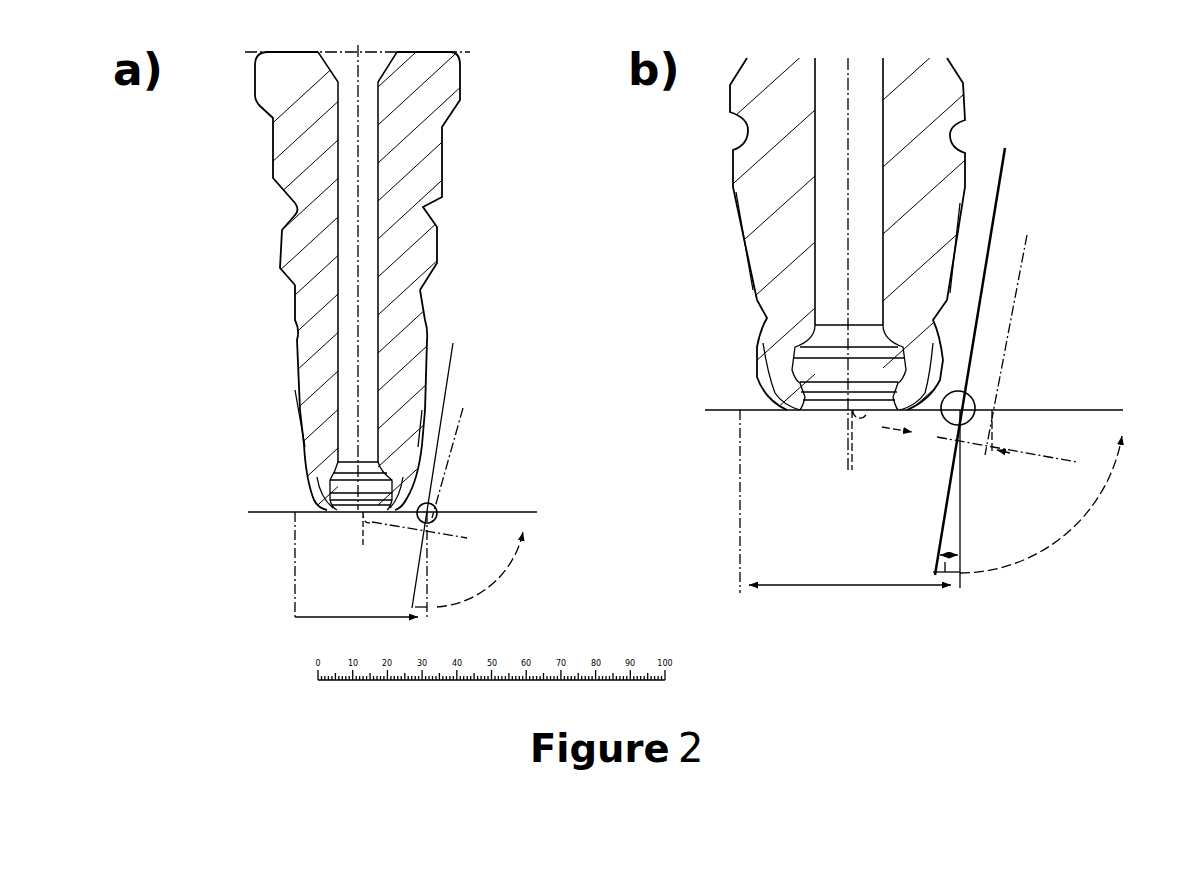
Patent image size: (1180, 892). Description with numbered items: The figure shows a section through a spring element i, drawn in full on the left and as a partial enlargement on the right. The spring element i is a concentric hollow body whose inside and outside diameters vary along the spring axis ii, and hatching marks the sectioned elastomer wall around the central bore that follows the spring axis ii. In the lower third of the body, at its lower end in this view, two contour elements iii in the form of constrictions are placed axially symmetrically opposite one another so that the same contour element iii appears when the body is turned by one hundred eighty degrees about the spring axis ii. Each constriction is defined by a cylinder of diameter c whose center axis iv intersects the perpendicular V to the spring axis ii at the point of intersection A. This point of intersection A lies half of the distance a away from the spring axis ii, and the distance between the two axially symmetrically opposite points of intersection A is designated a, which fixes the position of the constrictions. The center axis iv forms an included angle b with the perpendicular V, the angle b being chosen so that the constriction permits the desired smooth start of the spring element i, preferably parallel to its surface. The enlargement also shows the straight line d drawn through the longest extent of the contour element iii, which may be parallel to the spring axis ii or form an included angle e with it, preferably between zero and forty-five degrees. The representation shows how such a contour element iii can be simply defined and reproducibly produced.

The spring element i is at (423, 260).
The spring axis ii is at (358, 543).
The contour element iii is at (296, 409).
The center axis iv is at (1033, 142).
The perpendicular V is at (714, 454).
The point of intersection A is at (437, 503).
The distance between points of intersection a is at (627, 513).
The included angle b is at (768, 521).
The cylinder diameter c is at (410, 535).
The straight line through the longest extent d is at (972, 548).
The included angle with the spring axis e is at (947, 570).